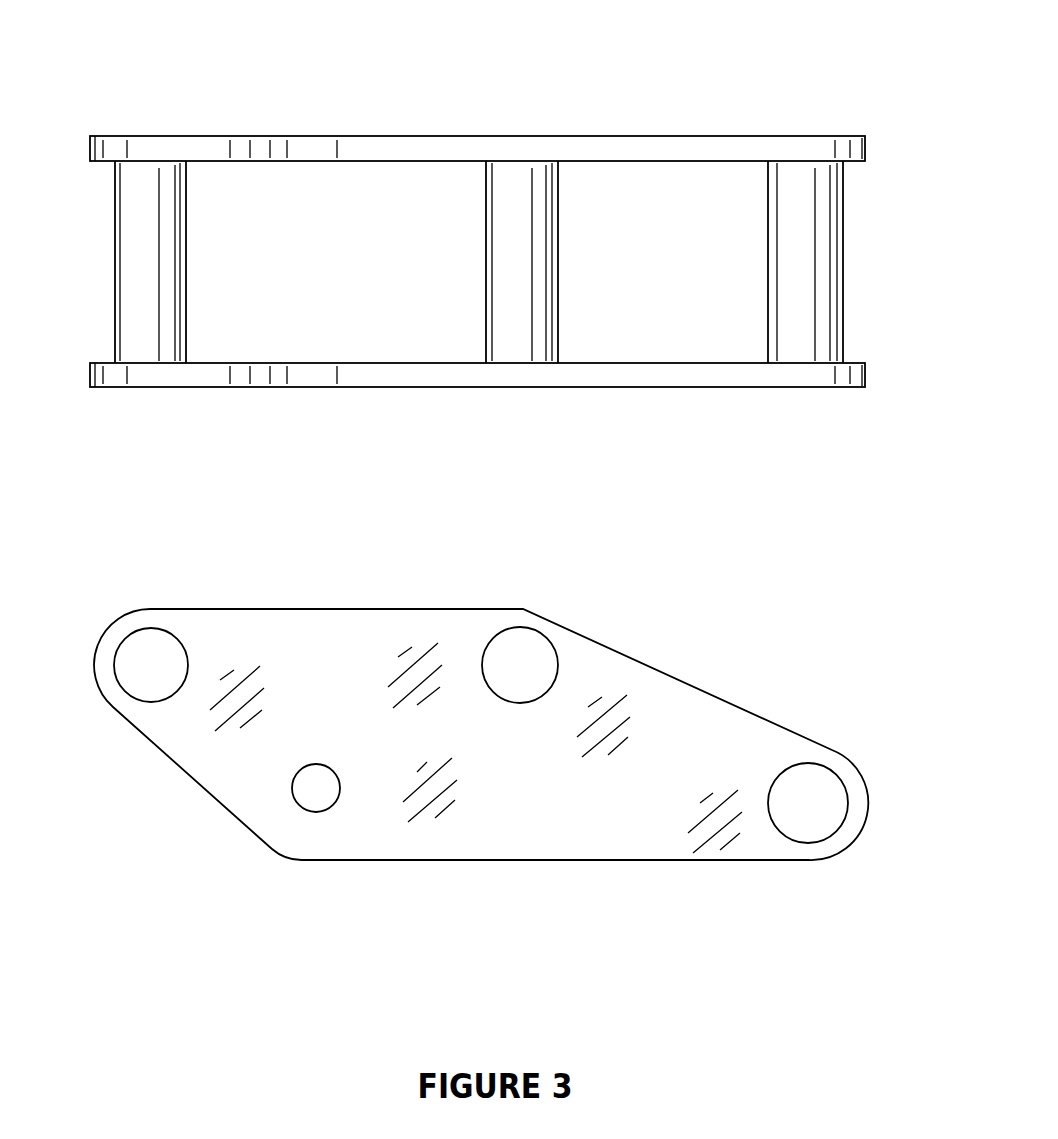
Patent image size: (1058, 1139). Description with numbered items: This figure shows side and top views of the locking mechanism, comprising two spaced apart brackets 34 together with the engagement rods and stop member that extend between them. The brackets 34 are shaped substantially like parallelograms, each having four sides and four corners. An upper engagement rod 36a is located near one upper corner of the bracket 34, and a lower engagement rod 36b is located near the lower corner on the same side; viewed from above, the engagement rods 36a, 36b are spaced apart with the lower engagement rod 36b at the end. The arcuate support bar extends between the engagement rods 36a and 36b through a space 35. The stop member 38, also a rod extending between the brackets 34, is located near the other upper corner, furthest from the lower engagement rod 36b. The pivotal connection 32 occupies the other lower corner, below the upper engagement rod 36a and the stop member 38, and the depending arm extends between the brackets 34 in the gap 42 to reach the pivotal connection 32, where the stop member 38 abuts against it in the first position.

The pivotal connection 32 is at (312, 383).
The brackets 34 is at (137, 138).
The space 35 is at (688, 298).
The upper engagement rod 36a is at (520, 197).
The lower engagement rod 36b is at (830, 257).
The stop member 38 is at (138, 303).
The gap 42 is at (338, 287).